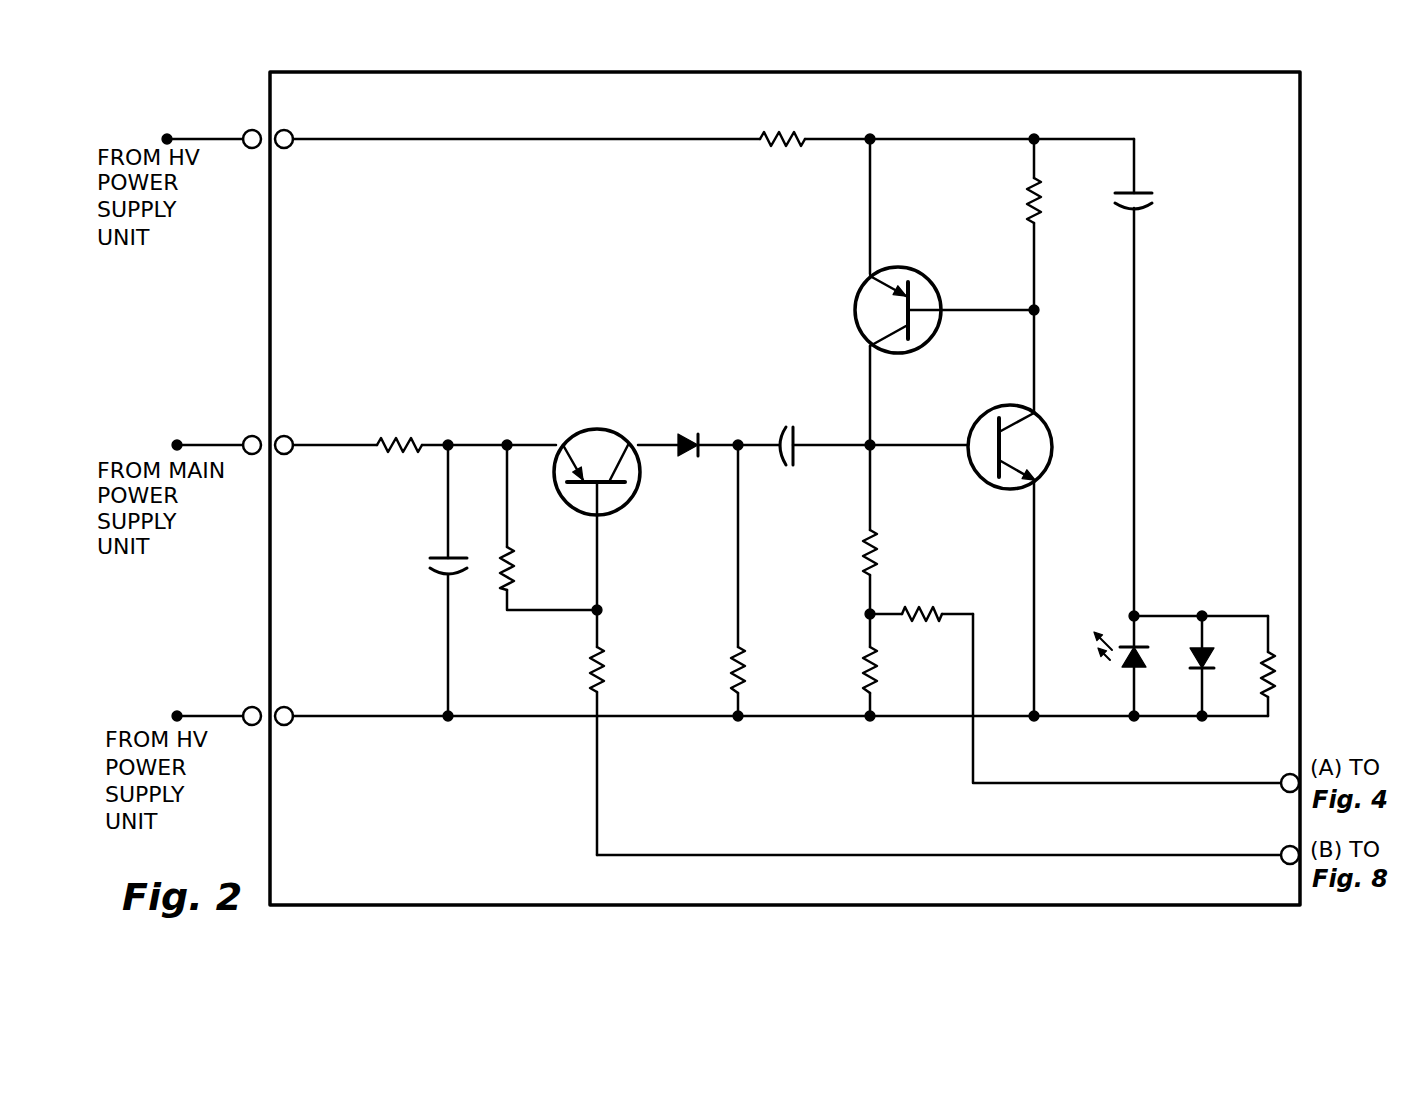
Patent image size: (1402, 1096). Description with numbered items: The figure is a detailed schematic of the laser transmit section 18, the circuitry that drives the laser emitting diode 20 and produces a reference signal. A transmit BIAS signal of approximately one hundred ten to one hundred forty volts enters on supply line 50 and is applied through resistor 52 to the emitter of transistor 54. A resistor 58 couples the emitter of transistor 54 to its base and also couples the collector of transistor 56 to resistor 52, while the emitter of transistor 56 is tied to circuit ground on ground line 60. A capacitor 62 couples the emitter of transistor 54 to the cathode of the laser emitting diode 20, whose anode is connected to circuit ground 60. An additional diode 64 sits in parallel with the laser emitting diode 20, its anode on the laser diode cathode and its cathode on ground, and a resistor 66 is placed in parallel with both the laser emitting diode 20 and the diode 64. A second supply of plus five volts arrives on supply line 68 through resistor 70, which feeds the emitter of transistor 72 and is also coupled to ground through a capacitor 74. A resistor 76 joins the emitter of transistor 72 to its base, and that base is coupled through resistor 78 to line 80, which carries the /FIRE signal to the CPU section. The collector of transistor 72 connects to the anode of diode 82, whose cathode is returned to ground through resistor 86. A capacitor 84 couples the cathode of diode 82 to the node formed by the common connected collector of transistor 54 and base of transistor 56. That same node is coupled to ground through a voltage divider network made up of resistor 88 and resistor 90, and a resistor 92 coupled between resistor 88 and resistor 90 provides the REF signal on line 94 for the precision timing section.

The laser transmit section 18 is at (222, 95).
The laser emitting diode 20 is at (1132, 666).
The supply line 50 is at (418, 142).
The resistor 52 is at (790, 150).
The transistor 54 is at (868, 280).
The transistor 56 is at (1040, 415).
The resistor 58 is at (1030, 180).
The ground line 60 is at (370, 718).
The capacitor 62 is at (1142, 193).
The diode 64 is at (1215, 668).
The resistor 66 is at (1272, 655).
The supply line 68 is at (368, 452).
The resistor 70 is at (398, 430).
The transistor 72 is at (590, 428).
The capacitor 74 is at (440, 568).
The resistor 76 is at (513, 560).
The resistor 78 is at (592, 680).
The line 80 is at (1003, 855).
The diode 82 is at (680, 428).
The capacitor 84 is at (780, 425).
The resistor 86 is at (735, 677).
The resistor 88 is at (868, 565).
The resistor 90 is at (868, 672).
The resistor 92 is at (908, 612).
The line 94 is at (1022, 783).